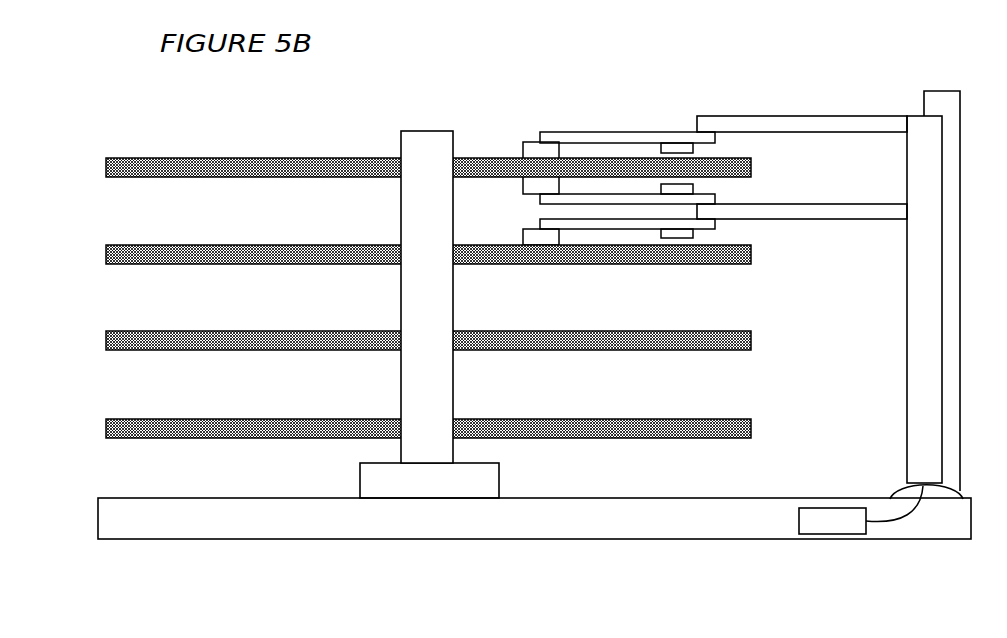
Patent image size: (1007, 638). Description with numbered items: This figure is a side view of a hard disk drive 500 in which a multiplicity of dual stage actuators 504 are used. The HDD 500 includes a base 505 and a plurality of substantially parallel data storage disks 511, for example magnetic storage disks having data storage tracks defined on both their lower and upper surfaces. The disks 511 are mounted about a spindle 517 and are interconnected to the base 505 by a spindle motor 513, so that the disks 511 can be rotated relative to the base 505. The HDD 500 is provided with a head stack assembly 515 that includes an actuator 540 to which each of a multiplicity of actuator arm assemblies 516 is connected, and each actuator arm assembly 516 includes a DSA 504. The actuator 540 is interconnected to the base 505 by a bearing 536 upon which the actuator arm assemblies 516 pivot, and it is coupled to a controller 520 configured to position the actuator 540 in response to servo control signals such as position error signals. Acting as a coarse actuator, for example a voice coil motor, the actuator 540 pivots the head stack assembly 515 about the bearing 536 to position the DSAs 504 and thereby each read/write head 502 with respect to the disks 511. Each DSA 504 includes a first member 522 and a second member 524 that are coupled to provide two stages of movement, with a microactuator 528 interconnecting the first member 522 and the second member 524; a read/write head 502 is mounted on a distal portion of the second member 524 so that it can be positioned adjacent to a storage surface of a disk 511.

The hard disk drive 500 is at (433, 273).
The read/write head 502 is at (523, 150).
The dual stage actuator 504 is at (626, 146).
The base 505 is at (133, 532).
The data storage disks 511 is at (209, 132).
The spindle motor 513 is at (446, 491).
The head stack assembly 515 is at (830, 270).
The actuator arm assembly 516 is at (819, 270).
The spindle 517 is at (443, 211).
The controller 520 is at (861, 510).
The first member 522 is at (708, 116).
The second member 524 is at (556, 132).
The microactuator 528 is at (695, 148).
The bearing 536 is at (902, 490).
The actuator 540 is at (933, 105).